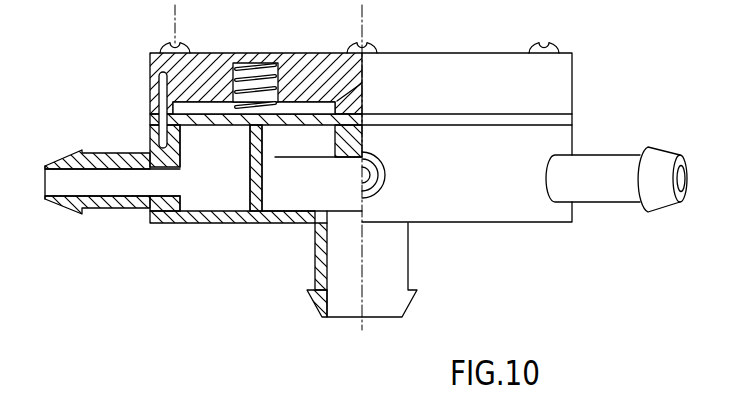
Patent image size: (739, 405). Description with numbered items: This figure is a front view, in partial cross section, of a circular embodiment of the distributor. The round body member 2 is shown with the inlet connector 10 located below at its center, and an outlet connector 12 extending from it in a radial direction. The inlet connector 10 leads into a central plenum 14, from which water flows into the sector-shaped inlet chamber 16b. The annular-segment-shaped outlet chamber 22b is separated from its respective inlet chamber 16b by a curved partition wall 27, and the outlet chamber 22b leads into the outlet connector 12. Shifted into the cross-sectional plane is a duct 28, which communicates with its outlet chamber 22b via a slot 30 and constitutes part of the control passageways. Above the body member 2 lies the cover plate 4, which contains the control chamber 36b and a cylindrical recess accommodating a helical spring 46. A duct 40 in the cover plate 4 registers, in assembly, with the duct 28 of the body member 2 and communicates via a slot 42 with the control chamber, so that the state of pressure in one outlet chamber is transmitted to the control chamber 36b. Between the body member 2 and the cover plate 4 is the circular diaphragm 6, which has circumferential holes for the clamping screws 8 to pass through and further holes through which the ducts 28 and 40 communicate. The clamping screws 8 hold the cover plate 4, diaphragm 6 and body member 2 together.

The body member 2 is at (562, 143).
The cover plate 4 is at (562, 79).
The diaphragm 6 is at (568, 122).
The clamping screws 8 is at (180, 33).
The inlet connector 10 is at (395, 256).
The outlet connectors 12 is at (606, 196).
The central plenum 14 is at (354, 203).
The inlet chamber 16b is at (319, 154).
The outlet chamber 22b is at (241, 194).
The curved partition wall 27 is at (257, 170).
The ducts 28 is at (151, 124).
The slots 30 is at (180, 128).
The control chamber 36b is at (330, 107).
The ducts 40 is at (159, 86).
The slots 42 is at (175, 111).
The helical springs 46 is at (258, 62).